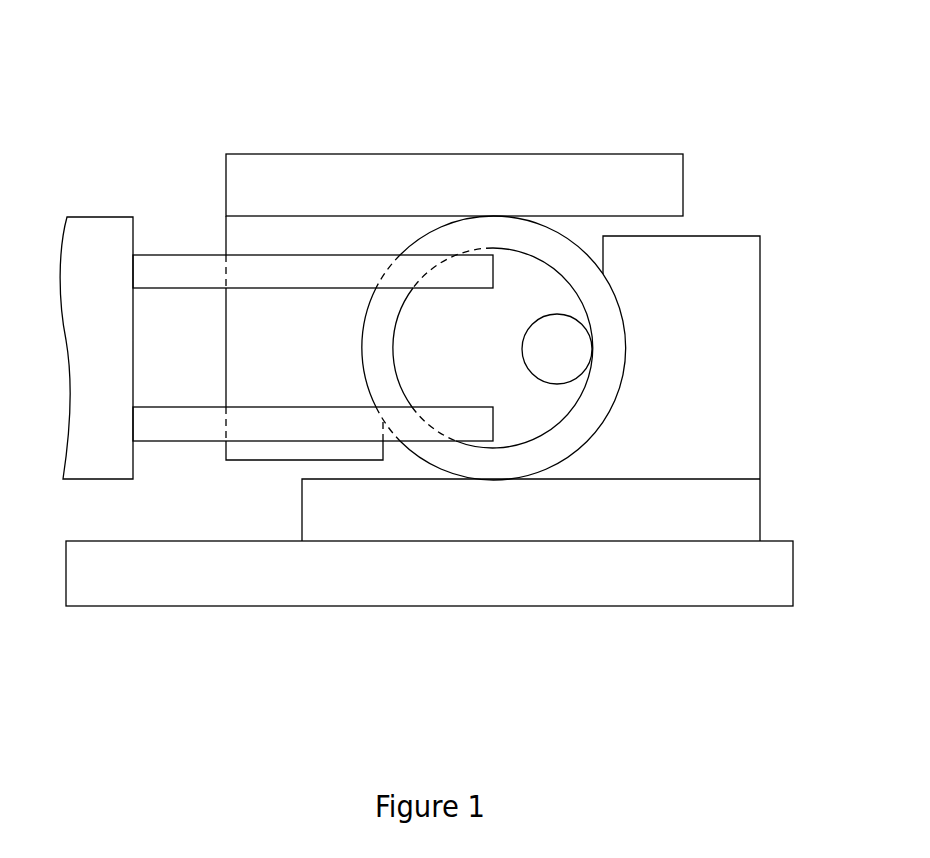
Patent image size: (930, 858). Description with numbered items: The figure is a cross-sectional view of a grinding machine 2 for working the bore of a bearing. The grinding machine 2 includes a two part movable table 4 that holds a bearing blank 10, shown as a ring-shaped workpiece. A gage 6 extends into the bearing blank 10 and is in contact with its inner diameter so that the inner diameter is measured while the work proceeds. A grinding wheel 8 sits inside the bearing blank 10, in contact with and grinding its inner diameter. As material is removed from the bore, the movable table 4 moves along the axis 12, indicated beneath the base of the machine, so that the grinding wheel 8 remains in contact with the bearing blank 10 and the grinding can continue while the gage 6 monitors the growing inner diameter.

The grinding machine 2 is at (314, 105).
The two part movable table 4 is at (716, 253).
The gage 6 is at (392, 252).
The grinding wheel 8 is at (577, 357).
The bearing blank 10 is at (368, 358).
The axis 12 is at (793, 620).